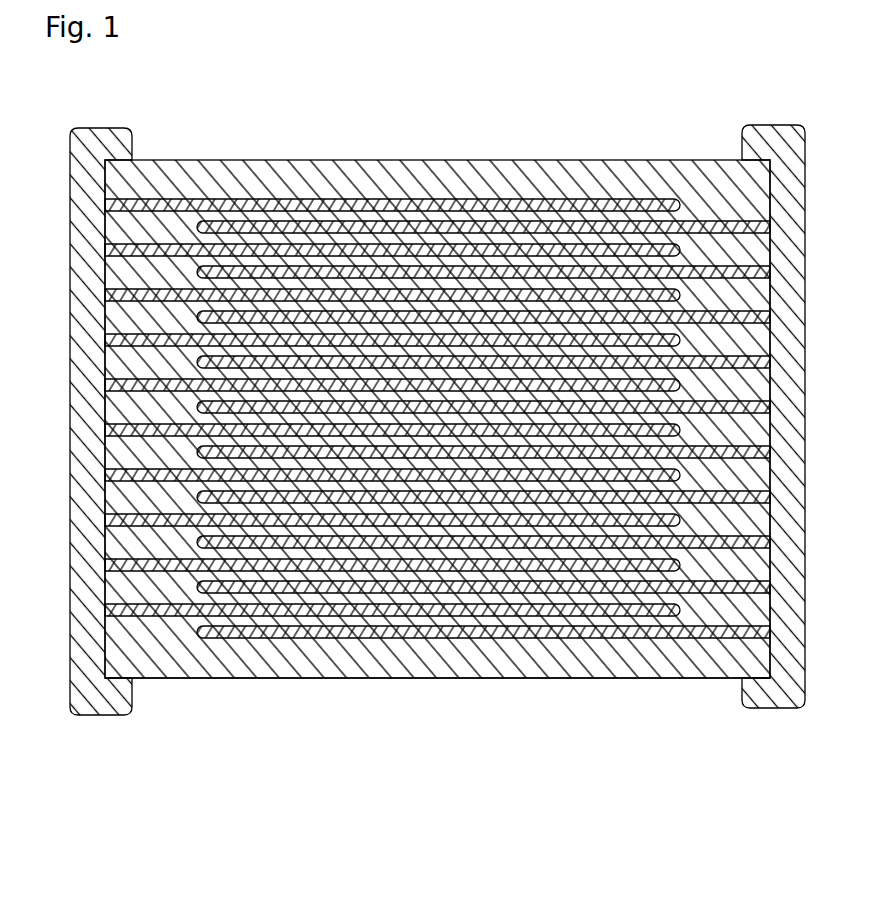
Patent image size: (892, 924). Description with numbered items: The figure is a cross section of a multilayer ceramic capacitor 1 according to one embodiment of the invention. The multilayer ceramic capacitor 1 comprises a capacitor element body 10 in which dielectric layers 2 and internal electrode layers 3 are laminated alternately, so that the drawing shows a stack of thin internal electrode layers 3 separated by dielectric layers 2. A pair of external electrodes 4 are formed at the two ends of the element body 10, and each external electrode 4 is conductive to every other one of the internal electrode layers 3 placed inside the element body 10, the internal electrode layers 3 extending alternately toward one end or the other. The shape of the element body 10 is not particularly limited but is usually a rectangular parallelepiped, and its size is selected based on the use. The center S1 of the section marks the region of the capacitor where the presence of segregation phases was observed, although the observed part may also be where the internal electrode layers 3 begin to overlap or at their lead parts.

The multilayer ceramic capacitor 1 is at (437, 454).
The dielectric layers 2 is at (318, 199).
The internal electrode layers 3 is at (496, 199).
The external electrodes 4 is at (768, 125).
The capacitor element body 10 is at (437, 445).
The center of the section S1 is at (327, 645).